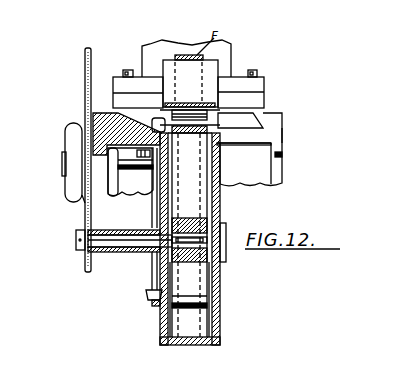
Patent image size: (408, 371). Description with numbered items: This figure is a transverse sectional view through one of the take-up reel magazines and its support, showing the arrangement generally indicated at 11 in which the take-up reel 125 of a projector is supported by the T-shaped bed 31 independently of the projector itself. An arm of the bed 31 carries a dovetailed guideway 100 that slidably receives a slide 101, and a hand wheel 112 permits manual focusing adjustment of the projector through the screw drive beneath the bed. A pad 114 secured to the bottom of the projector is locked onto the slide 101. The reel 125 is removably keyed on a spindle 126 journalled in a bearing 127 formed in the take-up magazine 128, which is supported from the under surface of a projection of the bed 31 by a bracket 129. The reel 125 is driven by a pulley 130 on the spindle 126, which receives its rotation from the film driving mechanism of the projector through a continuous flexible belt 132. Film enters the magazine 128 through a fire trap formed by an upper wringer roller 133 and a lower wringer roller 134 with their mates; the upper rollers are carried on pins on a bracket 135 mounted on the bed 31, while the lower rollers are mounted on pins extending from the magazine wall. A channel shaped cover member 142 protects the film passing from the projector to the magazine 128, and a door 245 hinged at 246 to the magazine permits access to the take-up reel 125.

The apparatus 11 is at (238, 60).
The T-shaped bed 31 is at (100, 134).
The dovetailed guideway 100 is at (95, 114).
The slide 101 is at (265, 116).
The hand wheel 112 is at (68, 160).
The pad 114 is at (258, 98).
The take-up reel 125 is at (216, 201).
The spindle 126 is at (113, 238).
The bearing 127 is at (143, 252).
The take-up magazine 128 is at (161, 332).
The bracket 129 is at (152, 167).
The pulley 130 is at (82, 263).
The continuous flexible belt 132 is at (81, 203).
The upper wringer roller 133 is at (254, 113).
The lower wringer roller 134 is at (219, 147).
The bracket 135 is at (150, 133).
The channel shaped cover member 142 is at (173, 83).
The door 245 is at (217, 305).
The hinge 246 is at (224, 254).